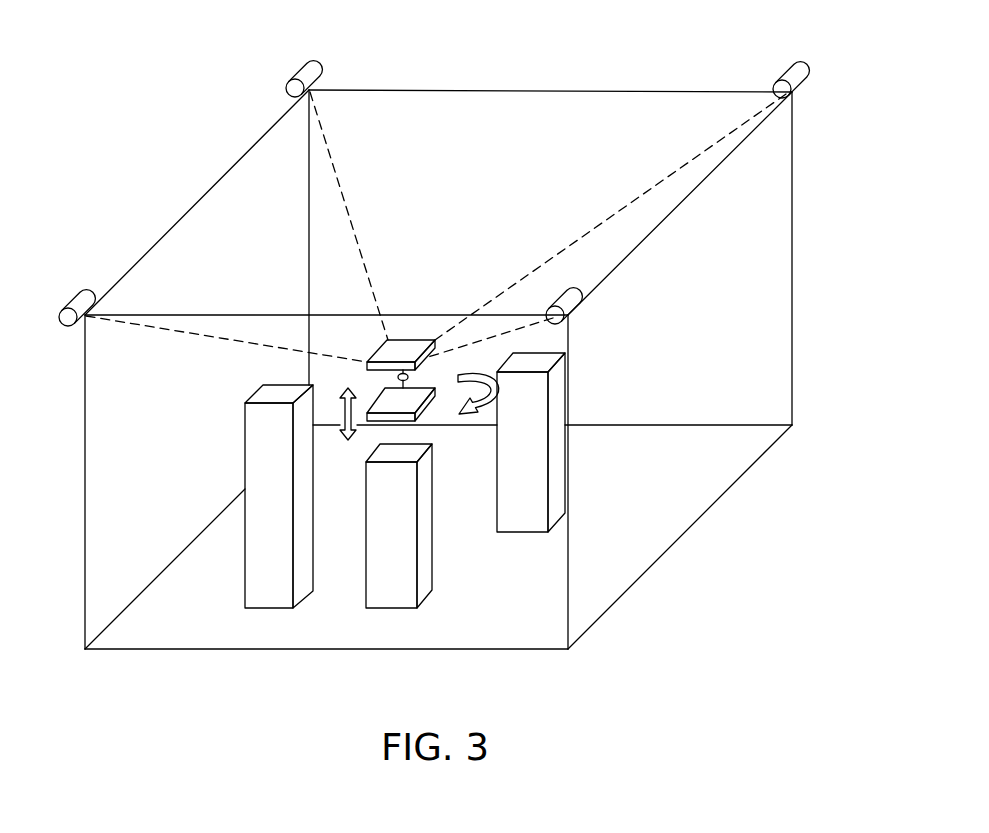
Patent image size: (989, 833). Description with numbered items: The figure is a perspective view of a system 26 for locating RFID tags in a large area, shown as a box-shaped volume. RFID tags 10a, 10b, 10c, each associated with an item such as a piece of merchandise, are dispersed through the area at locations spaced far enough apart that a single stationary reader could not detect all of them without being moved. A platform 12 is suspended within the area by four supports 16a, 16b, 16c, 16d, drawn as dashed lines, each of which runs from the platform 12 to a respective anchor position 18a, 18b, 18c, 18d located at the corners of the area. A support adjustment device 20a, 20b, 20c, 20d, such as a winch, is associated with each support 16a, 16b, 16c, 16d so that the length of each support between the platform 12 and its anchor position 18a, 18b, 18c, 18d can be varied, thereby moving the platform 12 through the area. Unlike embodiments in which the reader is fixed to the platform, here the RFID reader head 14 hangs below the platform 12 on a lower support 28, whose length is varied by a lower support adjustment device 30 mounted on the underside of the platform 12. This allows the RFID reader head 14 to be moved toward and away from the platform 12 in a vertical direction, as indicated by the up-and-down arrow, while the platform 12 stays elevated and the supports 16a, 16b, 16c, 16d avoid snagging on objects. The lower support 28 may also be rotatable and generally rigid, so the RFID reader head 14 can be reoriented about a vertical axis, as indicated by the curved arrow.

The system 26 is at (141, 149).
The support adjustment device 20a is at (798, 62).
The support adjustment device 20b is at (580, 296).
The support adjustment device 20c is at (73, 298).
The support adjustment device 20d is at (302, 70).
The anchor position 18a is at (796, 94).
The anchor position 18b is at (571, 317).
The anchor position 18c is at (88, 314).
The anchor position 18d is at (310, 89).
The support 16a is at (632, 202).
The support 16b is at (542, 324).
The support 16c is at (207, 337).
The support 16d is at (342, 198).
The platform 12 is at (398, 338).
The RFID reader head 14 is at (430, 417).
The lower support 28 is at (397, 387).
The lower support adjustment device 30 is at (398, 378).
The RFID tag 10a is at (527, 533).
The RFID tag 10b is at (437, 570).
The RFID tag 10c is at (270, 609).